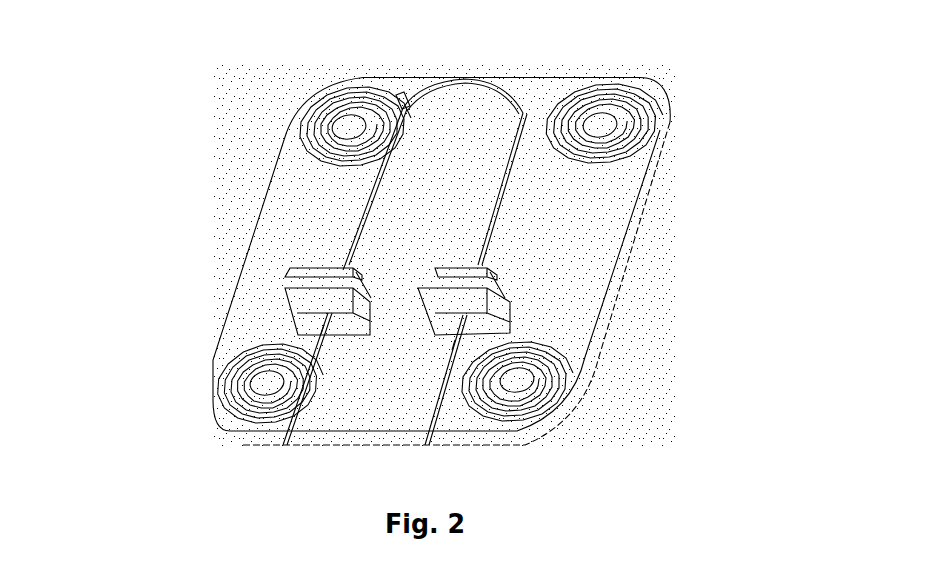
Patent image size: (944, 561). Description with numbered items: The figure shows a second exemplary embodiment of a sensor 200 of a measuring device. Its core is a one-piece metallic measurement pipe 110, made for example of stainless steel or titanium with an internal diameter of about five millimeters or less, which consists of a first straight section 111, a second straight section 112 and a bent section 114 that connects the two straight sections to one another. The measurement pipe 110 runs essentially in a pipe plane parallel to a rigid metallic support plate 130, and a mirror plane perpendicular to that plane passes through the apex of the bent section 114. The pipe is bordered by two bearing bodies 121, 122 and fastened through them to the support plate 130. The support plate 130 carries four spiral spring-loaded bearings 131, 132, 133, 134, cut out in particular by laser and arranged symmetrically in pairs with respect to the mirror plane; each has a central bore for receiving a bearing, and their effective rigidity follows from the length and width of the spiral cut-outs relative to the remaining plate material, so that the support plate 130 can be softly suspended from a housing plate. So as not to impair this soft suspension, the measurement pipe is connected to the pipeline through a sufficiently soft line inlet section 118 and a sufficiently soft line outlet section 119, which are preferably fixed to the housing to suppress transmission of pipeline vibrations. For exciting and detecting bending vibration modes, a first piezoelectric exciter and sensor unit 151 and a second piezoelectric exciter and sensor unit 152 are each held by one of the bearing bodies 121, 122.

The sensor 200 is at (204, 118).
The support plate 130 is at (277, 183).
The spiral spring-loaded bearing 133 is at (345, 107).
The spiral spring-loaded bearing 132 is at (615, 108).
The spiral spring-loaded bearing 134 is at (256, 396).
The spiral spring-loaded bearing 131 is at (530, 391).
The second straight section 112 is at (367, 206).
The measurement pipe 110 is at (357, 228).
The first straight section 111 is at (505, 193).
The bent section 114 is at (482, 82).
The second piezoelectric exciter and sensor unit 152 is at (320, 273).
The bearing body 122 is at (317, 290).
The first piezoelectric exciter and sensor unit 151 is at (467, 272).
The bearing body 121 is at (467, 290).
The line outlet section 119 is at (317, 340).
The line inlet section 118 is at (450, 373).